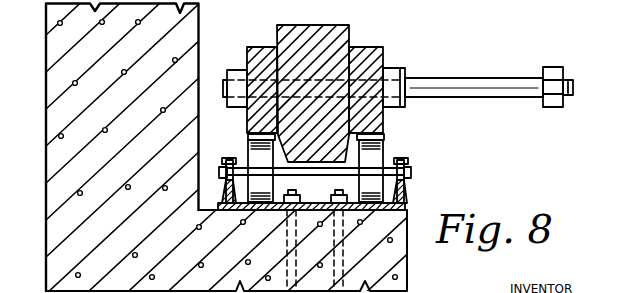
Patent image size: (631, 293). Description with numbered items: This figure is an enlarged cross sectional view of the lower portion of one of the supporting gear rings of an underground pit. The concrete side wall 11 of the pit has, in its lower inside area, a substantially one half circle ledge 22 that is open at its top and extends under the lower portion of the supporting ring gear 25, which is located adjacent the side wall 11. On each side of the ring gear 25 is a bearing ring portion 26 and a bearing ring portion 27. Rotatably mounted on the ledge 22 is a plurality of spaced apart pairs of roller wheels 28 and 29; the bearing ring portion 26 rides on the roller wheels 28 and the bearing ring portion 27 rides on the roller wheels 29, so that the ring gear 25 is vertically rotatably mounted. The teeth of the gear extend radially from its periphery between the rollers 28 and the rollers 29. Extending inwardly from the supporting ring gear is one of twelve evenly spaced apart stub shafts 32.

The concrete side wall 11 is at (60, 65).
The ledge 22 is at (215, 209).
The supporting ring gear 25 is at (305, 30).
The bearing ring portion 26 is at (258, 47).
The bearing ring portion 27 is at (368, 47).
The roller wheels 28 is at (247, 156).
The roller wheels 29 is at (376, 155).
The stub shaft 32 is at (452, 88).